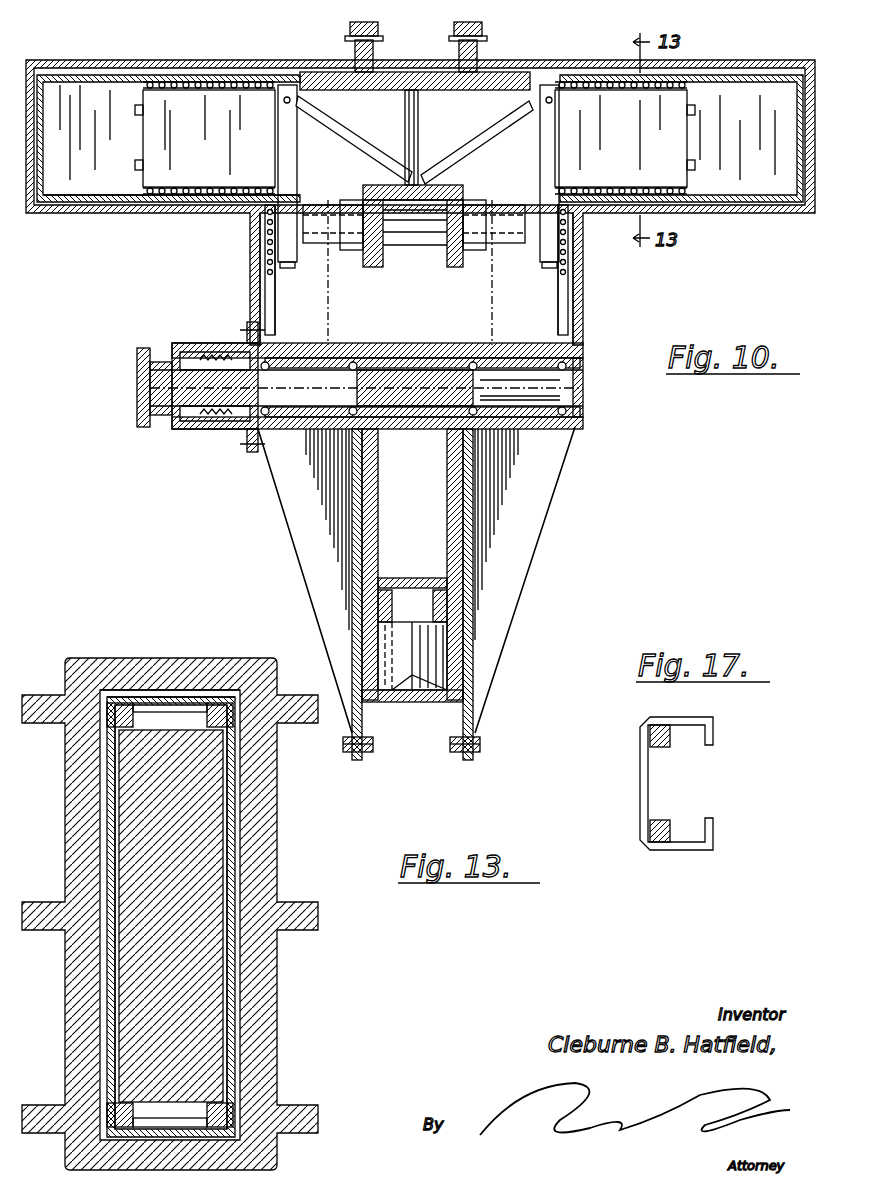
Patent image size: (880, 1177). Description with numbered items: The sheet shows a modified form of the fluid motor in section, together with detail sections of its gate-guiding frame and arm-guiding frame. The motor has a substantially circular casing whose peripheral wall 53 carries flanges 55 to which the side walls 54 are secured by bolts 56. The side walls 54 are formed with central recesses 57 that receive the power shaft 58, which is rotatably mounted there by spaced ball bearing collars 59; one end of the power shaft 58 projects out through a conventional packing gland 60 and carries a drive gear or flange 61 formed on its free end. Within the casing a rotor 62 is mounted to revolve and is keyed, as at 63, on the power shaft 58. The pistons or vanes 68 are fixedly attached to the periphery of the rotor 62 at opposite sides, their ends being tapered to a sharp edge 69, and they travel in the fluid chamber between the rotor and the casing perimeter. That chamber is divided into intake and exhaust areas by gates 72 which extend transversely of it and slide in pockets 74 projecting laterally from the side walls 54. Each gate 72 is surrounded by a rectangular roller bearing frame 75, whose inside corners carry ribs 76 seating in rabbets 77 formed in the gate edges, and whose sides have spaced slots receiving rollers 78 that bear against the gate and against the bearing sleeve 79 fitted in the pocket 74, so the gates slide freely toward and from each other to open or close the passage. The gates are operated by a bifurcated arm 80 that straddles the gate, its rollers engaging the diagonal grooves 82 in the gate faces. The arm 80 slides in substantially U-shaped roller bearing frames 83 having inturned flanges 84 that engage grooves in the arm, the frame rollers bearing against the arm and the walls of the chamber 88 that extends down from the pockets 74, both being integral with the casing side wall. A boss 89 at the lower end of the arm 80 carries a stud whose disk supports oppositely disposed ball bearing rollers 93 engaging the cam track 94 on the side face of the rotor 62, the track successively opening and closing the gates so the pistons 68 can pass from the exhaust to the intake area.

In FIG. 10, the peripheral wall 53 is at (396, 78).
In FIG. 10, the side walls 54 is at (357, 598).
In FIG. 10, the flanges 55 is at (370, 722).
In FIG. 10, the bolts 56 is at (352, 755).
In FIG. 10, the central recesses 57 is at (273, 430).
In FIG. 10, the power shaft 58 is at (553, 388).
In FIG. 10, the ball bearing collars 59 is at (585, 413).
In FIG. 10, the packing gland 60 is at (197, 430).
In FIG. 10, the drive gear or flange 61 is at (137, 362).
In FIG. 10, the rotor 62 is at (455, 530).
In FIG. 10, the key 63 is at (423, 408).
In FIG. 10, the pistons or vanes 68 is at (373, 657).
In FIG. 10, the sharp edge 69 is at (413, 653).
In FIG. 10, the gates 72 is at (192, 108).
In FIG. 13, the gates 72 is at (197, 868).
In FIG. 10, the pockets 74 is at (760, 62).
In FIG. 13, the pockets 74 is at (105, 694).
In FIG. 10, the roller bearing frame 75 is at (168, 202).
In FIG. 13, the roller bearing frame 75 is at (233, 815).
In FIG. 13, the ribs 76 is at (113, 715).
In FIG. 13, the rabbets 77 is at (214, 737).
In FIG. 10, the rollers 78 is at (245, 82).
In FIG. 13, the rollers 78 is at (169, 693).
In FIG. 10, the bearing sleeve 79 is at (90, 213).
In FIG. 10, the bifurcated arm 80 is at (284, 152).
In FIG. 10, the diagonal grooves 82 is at (508, 110).
In FIG. 10, the roller bearing frames 83 is at (570, 268).
In FIG. 17, the roller bearing frames 83 is at (645, 788).
In FIG. 17, the inturned flanges 84 is at (708, 736).
In FIG. 10, the chamber 88 is at (252, 310).
In FIG. 10, the boss 89 is at (329, 262).
In FIG. 10, the ball bearing rollers 93 is at (440, 252).
In FIG. 10, the cam track 94 is at (453, 228).